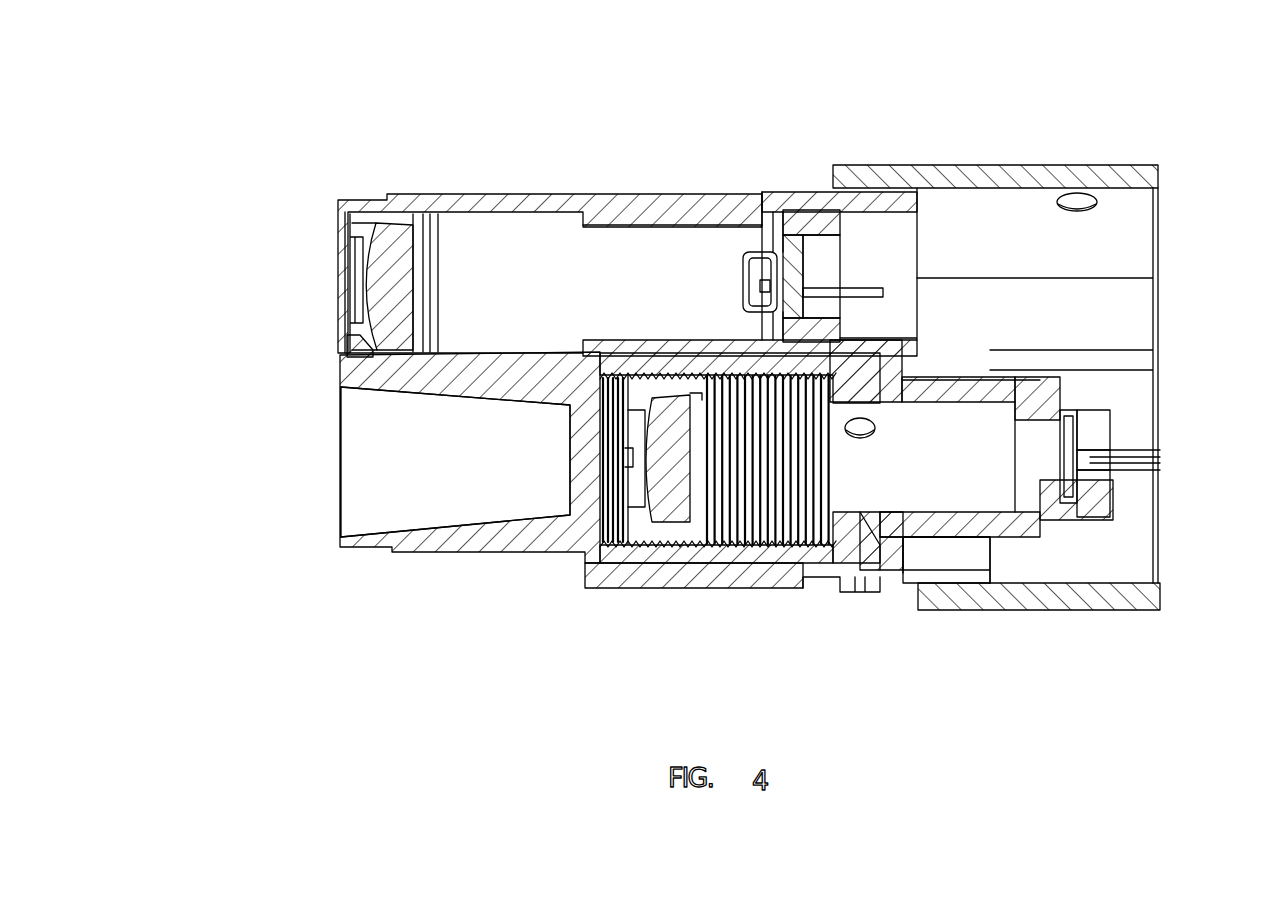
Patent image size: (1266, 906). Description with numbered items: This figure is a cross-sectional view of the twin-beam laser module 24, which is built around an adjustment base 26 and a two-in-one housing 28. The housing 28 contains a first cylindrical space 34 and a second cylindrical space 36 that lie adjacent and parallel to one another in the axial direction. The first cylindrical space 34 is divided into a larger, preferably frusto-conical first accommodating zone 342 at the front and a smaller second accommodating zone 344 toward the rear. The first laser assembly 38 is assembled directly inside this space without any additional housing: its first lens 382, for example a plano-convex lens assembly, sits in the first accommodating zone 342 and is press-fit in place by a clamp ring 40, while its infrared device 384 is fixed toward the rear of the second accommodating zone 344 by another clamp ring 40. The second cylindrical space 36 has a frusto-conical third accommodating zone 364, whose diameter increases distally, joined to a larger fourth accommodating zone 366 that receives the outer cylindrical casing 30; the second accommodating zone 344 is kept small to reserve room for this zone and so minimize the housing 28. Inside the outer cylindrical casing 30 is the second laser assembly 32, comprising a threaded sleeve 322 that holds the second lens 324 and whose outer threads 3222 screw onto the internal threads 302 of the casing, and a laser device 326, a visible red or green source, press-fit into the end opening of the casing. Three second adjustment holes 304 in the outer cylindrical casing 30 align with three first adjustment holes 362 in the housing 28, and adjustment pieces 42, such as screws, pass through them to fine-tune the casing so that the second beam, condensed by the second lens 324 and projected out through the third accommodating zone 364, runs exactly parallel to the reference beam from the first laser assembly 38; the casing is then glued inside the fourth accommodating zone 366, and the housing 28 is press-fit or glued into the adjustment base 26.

The twin-beam laser module 24 is at (248, 217).
The adjustment base 26 is at (1012, 175).
The housing 28 is at (742, 200).
The outer cylindrical casing 30 is at (1025, 530).
The second laser assembly 32 is at (1058, 598).
The first cylindrical space 34 is at (590, 222).
The second cylindrical space 36 is at (593, 527).
The first laser assembly 38 is at (375, 225).
The clamp ring 40 is at (822, 240).
The adjustment pieces 42 is at (878, 440).
The internal threads 302 is at (740, 547).
The second adjustment holes 304 is at (843, 590).
The threaded sleeve 322 is at (638, 550).
The second lens 324 is at (687, 535).
The laser device 326 is at (1067, 418).
The first accommodating zone 342 is at (490, 228).
The second accommodating zone 344 is at (645, 237).
The first adjustment holes 362 is at (900, 545).
The third accommodating zone 364 is at (360, 470).
The fourth accommodating zone 366 is at (975, 560).
The first lens 382 is at (395, 235).
The infrared device 384 is at (758, 256).
The threads 3222 is at (698, 520).